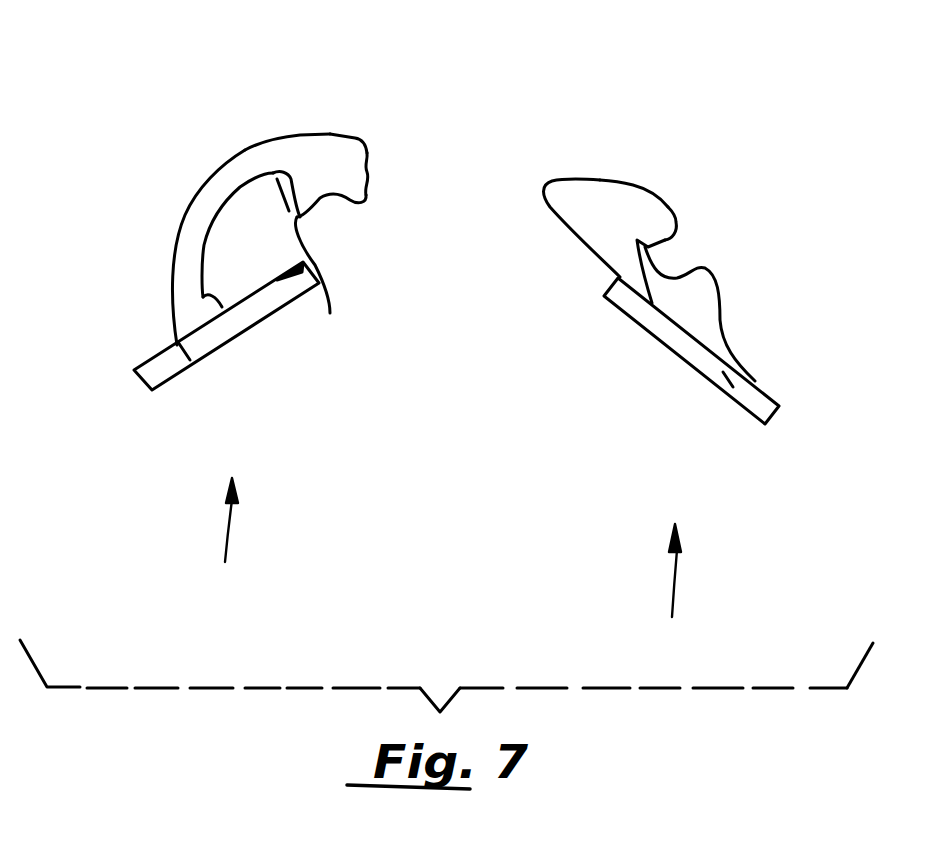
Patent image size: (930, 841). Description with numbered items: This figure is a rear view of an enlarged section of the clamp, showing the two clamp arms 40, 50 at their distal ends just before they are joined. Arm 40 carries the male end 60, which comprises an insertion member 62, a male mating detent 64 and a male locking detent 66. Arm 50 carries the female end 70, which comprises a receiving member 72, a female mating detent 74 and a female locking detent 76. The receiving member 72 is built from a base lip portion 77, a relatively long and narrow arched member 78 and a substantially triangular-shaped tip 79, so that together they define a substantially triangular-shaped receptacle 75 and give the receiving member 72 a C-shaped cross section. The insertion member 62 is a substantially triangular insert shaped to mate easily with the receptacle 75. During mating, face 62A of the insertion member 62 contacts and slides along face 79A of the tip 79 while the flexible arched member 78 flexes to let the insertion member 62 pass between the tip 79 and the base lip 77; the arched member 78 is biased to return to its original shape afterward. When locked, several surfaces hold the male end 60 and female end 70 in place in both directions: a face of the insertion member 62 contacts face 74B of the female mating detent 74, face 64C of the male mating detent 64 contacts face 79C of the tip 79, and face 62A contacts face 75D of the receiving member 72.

The arm 40 is at (756, 408).
The arm 50 is at (161, 388).
The male end 60 is at (690, 658).
The insertion member 62 is at (624, 203).
The face of insertion member 62A is at (573, 178).
The male mating detent 64 is at (679, 222).
The face of male mating detent 64C is at (672, 240).
The male locking detent 66 is at (710, 289).
The female end 70 is at (243, 601).
The receiving member 72 is at (247, 148).
The female mating detent 74 is at (321, 286).
The face of female mating detent 74B is at (280, 199).
The receptacle 75 is at (272, 253).
The face of receiving member 75D is at (222, 308).
The female locking detent 76 is at (371, 163).
The base lip portion 77 is at (300, 262).
The arched member 78 is at (213, 187).
The tip 79 is at (331, 147).
The face of tip 79A is at (330, 201).
The face of tip 79C is at (268, 213).